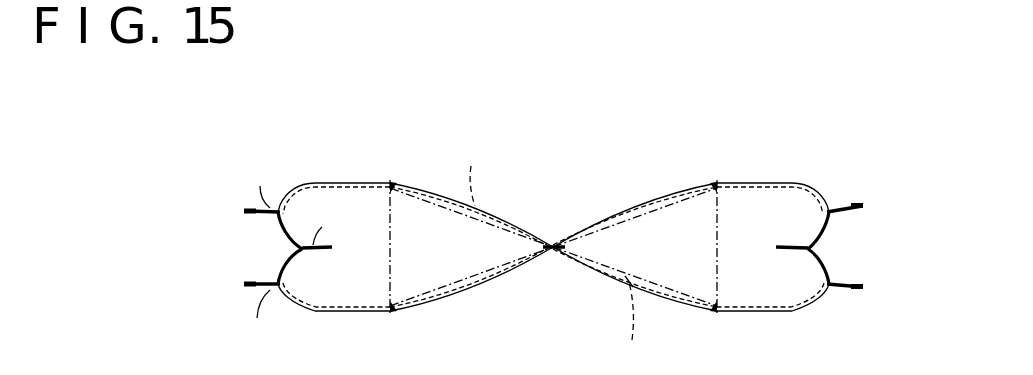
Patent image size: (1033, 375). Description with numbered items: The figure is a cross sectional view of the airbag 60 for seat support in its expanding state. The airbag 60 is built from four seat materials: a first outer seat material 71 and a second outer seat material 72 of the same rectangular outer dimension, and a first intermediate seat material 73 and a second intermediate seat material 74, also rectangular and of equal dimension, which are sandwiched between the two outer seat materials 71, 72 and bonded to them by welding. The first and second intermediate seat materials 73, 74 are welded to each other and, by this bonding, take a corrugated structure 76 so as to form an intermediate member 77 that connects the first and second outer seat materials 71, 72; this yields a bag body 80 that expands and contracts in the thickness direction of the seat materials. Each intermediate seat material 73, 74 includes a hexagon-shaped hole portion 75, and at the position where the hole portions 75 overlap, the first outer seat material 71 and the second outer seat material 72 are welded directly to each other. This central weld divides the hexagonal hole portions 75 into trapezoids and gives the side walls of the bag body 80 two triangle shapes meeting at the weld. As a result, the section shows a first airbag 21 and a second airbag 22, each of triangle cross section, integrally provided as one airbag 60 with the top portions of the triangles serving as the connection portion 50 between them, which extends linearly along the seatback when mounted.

The airbag 60 is at (237, 125).
The bag body 80 is at (482, 212).
The first outer seat material 71 is at (360, 182).
The second outer seat material 72 is at (325, 312).
The first intermediate seat material 73 is at (275, 229).
The second intermediate seat material 74 is at (275, 268).
The hole portion 75 is at (780, 246).
The corrugated structure 76 is at (191, 249).
The intermediate member 77 is at (207, 210).
The first airbag 21 is at (635, 246).
The second airbag 22 is at (471, 246).
The connection portion 50 is at (548, 245).